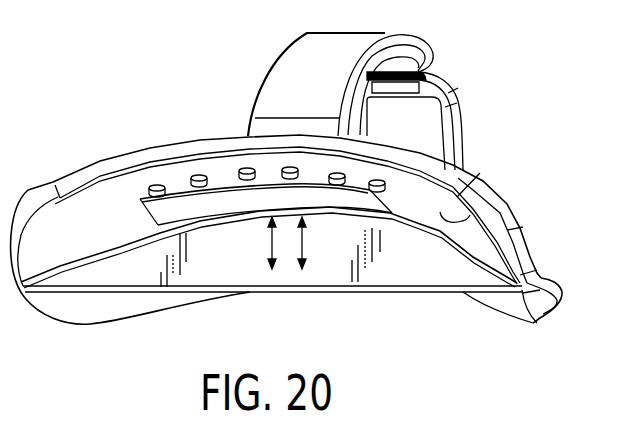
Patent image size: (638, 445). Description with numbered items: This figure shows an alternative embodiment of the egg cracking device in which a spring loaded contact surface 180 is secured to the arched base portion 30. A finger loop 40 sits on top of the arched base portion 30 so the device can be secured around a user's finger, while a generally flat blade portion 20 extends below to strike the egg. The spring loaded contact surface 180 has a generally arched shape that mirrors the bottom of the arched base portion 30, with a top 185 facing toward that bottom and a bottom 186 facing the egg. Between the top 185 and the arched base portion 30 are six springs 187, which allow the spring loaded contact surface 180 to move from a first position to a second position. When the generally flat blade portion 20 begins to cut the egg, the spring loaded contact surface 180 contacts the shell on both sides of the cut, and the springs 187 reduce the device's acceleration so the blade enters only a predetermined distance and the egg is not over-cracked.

The generally flat blade portion 20 is at (420, 263).
The arched base portion 30 is at (472, 224).
The finger loop 40 is at (296, 63).
The spring loaded contact surface 180 is at (200, 210).
The top of the spring loaded contact surface 185 is at (222, 187).
The bottom of the spring loaded contact surface 186 is at (248, 200).
The spring 187 is at (148, 193).